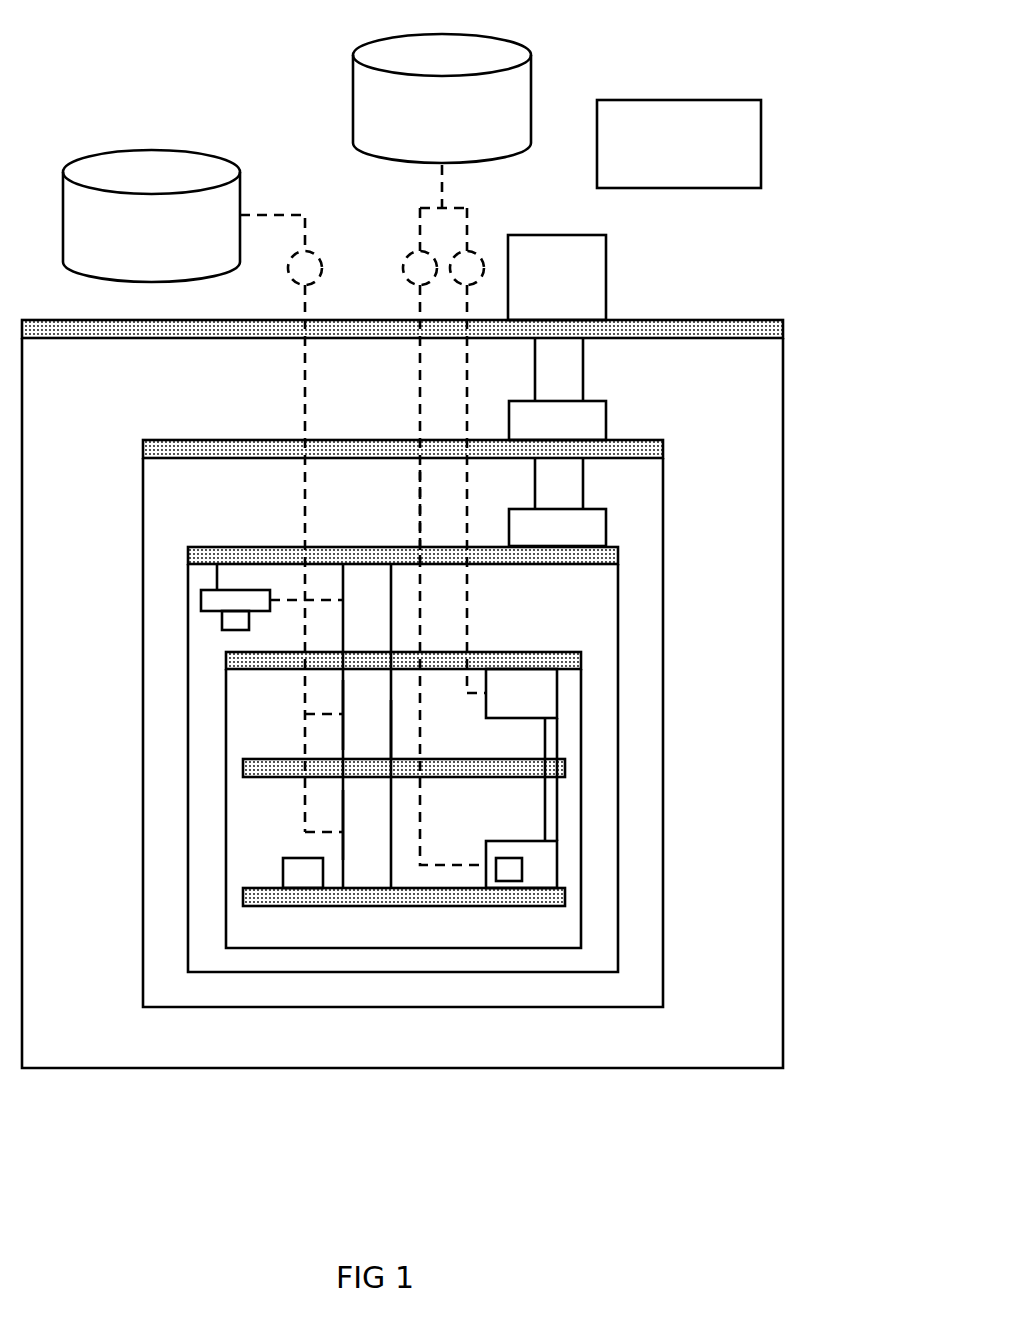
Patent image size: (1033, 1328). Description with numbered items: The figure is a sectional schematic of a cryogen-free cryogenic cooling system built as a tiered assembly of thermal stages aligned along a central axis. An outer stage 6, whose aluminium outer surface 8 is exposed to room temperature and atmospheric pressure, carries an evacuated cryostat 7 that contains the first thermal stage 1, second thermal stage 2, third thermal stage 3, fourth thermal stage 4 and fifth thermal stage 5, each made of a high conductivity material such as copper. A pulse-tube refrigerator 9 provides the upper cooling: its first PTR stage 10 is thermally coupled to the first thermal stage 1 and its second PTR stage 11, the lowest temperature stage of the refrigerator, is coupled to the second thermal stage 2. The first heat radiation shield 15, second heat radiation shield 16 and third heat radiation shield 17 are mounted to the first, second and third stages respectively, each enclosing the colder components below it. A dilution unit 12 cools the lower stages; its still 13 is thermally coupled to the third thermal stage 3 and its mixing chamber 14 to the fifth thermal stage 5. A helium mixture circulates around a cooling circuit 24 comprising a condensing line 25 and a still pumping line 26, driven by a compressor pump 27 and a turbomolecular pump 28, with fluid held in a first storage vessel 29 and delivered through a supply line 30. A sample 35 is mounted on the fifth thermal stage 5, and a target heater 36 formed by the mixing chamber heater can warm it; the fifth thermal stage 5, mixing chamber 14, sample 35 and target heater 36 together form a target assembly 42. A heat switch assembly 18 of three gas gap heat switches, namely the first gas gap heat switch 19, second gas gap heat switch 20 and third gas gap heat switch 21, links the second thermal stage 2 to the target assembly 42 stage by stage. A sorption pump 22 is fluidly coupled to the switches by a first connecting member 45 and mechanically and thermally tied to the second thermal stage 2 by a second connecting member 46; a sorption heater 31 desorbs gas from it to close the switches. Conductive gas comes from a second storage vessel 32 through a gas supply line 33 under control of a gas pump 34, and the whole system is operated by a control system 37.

The first thermal stage 1 is at (646, 445).
The second thermal stage 2 is at (617, 548).
The third thermal stage 3 is at (562, 650).
The fourth thermal stage 4 is at (560, 765).
The fifth thermal stage 5 is at (558, 902).
The outer stage 6 is at (413, 299).
The cryostat 7 is at (787, 502).
The outer surface 8 is at (681, 320).
The pulse-tube refrigerator 9 is at (557, 277).
The first PTR stage 10 is at (557, 389).
The second PTR stage 11 is at (557, 502).
The dilution unit 12 is at (569, 798).
The still 13 is at (521, 693).
The mixing chamber 14 is at (550, 862).
The first heat radiation shield 15 is at (437, 702).
The second heat radiation shield 16 is at (420, 740).
The third heat radiation shield 17 is at (442, 779).
The heat switch assembly 18 is at (407, 733).
The first gas gap heat switch 19 is at (367, 726).
The second gas gap heat switch 20 is at (361, 715).
The third gas gap heat switch 21 is at (361, 825).
The sorption pump 22 is at (228, 600).
The cooling circuit 24 is at (405, 402).
The condensing line 25 is at (416, 502).
The still pumping line 26 is at (470, 498).
The compressor pump 27 is at (410, 256).
The turbomolecular pump 28 is at (479, 256).
The first storage vessel 29 is at (442, 98).
The supply line 30 is at (447, 185).
The sorption heater 31 is at (235, 622).
The second storage vessel 32 is at (151, 216).
The gas supply line 33 is at (303, 398).
The gas pump 34 is at (316, 252).
The sample 35 is at (303, 873).
The target heater 36 is at (506, 874).
The control system 37 is at (679, 144).
The target assembly 42 is at (379, 921).
The first connecting member 45 is at (292, 603).
The second connecting member 46 is at (215, 577).